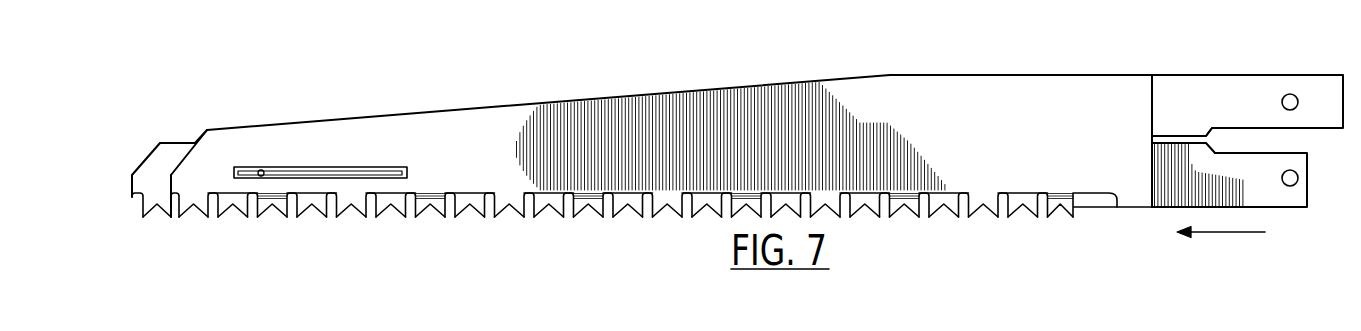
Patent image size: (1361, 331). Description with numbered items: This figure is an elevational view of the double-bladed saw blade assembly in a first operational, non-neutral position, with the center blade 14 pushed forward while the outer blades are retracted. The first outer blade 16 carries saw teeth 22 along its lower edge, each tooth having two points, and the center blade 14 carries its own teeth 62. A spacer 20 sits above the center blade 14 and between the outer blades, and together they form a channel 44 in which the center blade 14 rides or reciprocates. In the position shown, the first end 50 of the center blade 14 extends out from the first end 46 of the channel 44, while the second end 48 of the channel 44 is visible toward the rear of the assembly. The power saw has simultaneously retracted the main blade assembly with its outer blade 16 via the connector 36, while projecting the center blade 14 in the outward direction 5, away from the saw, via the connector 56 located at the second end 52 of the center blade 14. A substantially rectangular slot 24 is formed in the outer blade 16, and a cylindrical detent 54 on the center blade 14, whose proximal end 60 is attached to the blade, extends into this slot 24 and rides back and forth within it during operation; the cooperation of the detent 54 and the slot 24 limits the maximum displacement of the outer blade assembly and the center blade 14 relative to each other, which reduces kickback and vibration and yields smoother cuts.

The first or outward direction 5 is at (1222, 235).
The center blade 14 is at (156, 165).
The first outer blade 16 is at (233, 135).
The spacer 20 is at (1241, 85).
The saw teeth 22 is at (200, 212).
The slot 24 is at (399, 167).
The connector 36 is at (1291, 95).
The channel 44 is at (195, 136).
The first end of the channel 46 is at (205, 129).
The second end of the channel 48 is at (1177, 136).
The first end of the center blade 50 is at (133, 186).
The second end of the center blade 52 is at (1310, 180).
The detent 54 is at (305, 152).
The connector 56 is at (1292, 187).
The proximal end of the detent 60 is at (262, 168).
The teeth of the center blade 62 is at (151, 212).